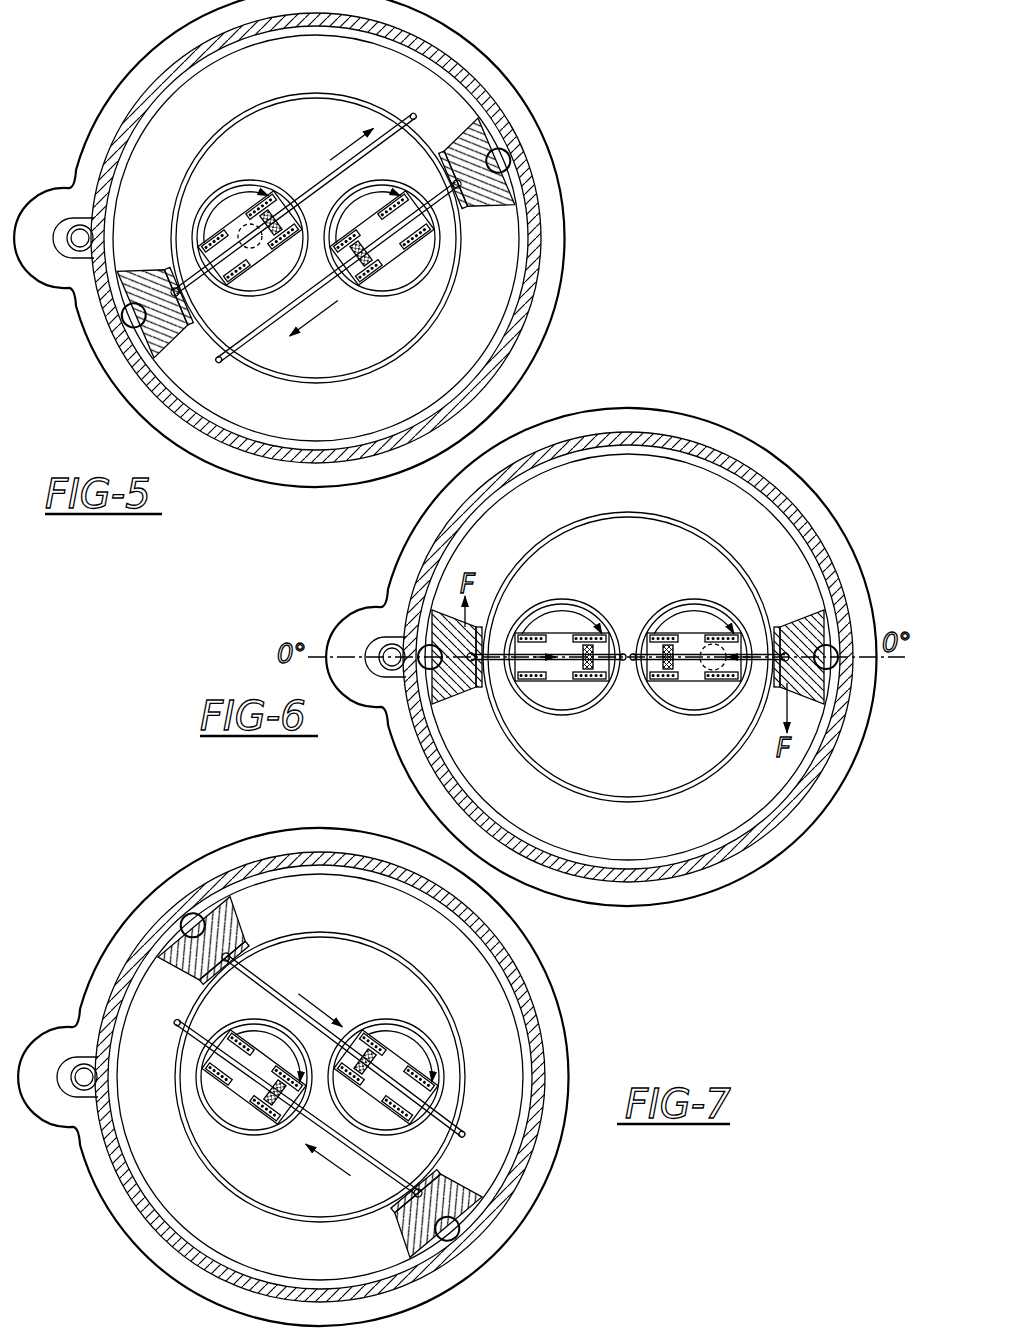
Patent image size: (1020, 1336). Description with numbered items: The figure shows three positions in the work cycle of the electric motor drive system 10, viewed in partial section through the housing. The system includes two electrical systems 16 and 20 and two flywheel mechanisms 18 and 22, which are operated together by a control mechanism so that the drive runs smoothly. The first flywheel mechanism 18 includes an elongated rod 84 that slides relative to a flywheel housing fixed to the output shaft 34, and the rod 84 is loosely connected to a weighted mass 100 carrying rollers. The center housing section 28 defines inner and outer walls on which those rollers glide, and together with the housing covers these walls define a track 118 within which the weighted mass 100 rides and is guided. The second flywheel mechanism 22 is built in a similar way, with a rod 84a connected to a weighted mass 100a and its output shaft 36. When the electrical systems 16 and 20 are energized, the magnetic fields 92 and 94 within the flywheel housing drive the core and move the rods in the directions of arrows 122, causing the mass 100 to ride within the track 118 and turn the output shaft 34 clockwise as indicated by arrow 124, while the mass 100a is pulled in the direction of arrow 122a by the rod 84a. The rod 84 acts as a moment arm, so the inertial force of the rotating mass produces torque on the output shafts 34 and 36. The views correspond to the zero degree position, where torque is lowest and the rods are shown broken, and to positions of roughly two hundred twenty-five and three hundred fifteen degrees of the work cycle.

In FIG. 5, the electric motor drive system 10 is at (118, 74).
In FIG. 6, the electric motor drive system 10 is at (372, 572).
In FIG. 7, the electric motor drive system 10 is at (586, 1062).
In FIG. 6, the electrical system 16 is at (663, 600).
In FIG. 7, the electrical system 16 is at (384, 1010).
In FIG. 5, the first flywheel mechanism 18 is at (500, 135).
In FIG. 6, the first flywheel mechanism 18 is at (822, 612).
In FIG. 6, the electrical system 20 is at (593, 600).
In FIG. 7, the electrical system 20 is at (268, 1140).
In FIG. 5, the second flywheel mechanism 22 is at (170, 360).
In FIG. 6, the second flywheel mechanism 22 is at (466, 712).
In FIG. 5, the center housing section 28 is at (482, 62).
In FIG. 6, the center housing section 28 is at (757, 474).
In FIG. 7, the center housing section 28 is at (548, 1177).
In FIG. 6, the output shaft 34 is at (725, 650).
In FIG. 5, the output shaft 36 is at (246, 222).
In FIG. 6, the elongated rod 84 is at (725, 667).
In FIG. 5, the rod 84a is at (370, 150).
In FIG. 6, the rod 84a is at (569, 660).
In FIG. 6, the magnetic field 92 is at (583, 696).
In FIG. 6, the magnetic field 94 is at (718, 641).
In FIG. 5, the weighted mass 100 is at (513, 118).
In FIG. 6, the weighted mass 100 is at (833, 673).
In FIG. 7, the weighted mass 100 is at (218, 908).
In FIG. 5, the weighted mass 100a is at (131, 370).
In FIG. 6, the weighted mass 100a is at (397, 690).
In FIG. 7, the weighted mass 100a is at (463, 1203).
In FIG. 5, the track 118 is at (383, 75).
In FIG. 6, the track 118 is at (702, 504).
In FIG. 7, the track 118 is at (375, 917).
In FIG. 6, the arrow 122 is at (733, 686).
In FIG. 6, the arrow 122a is at (532, 630).
In FIG. 6, the arrow 124 is at (692, 612).